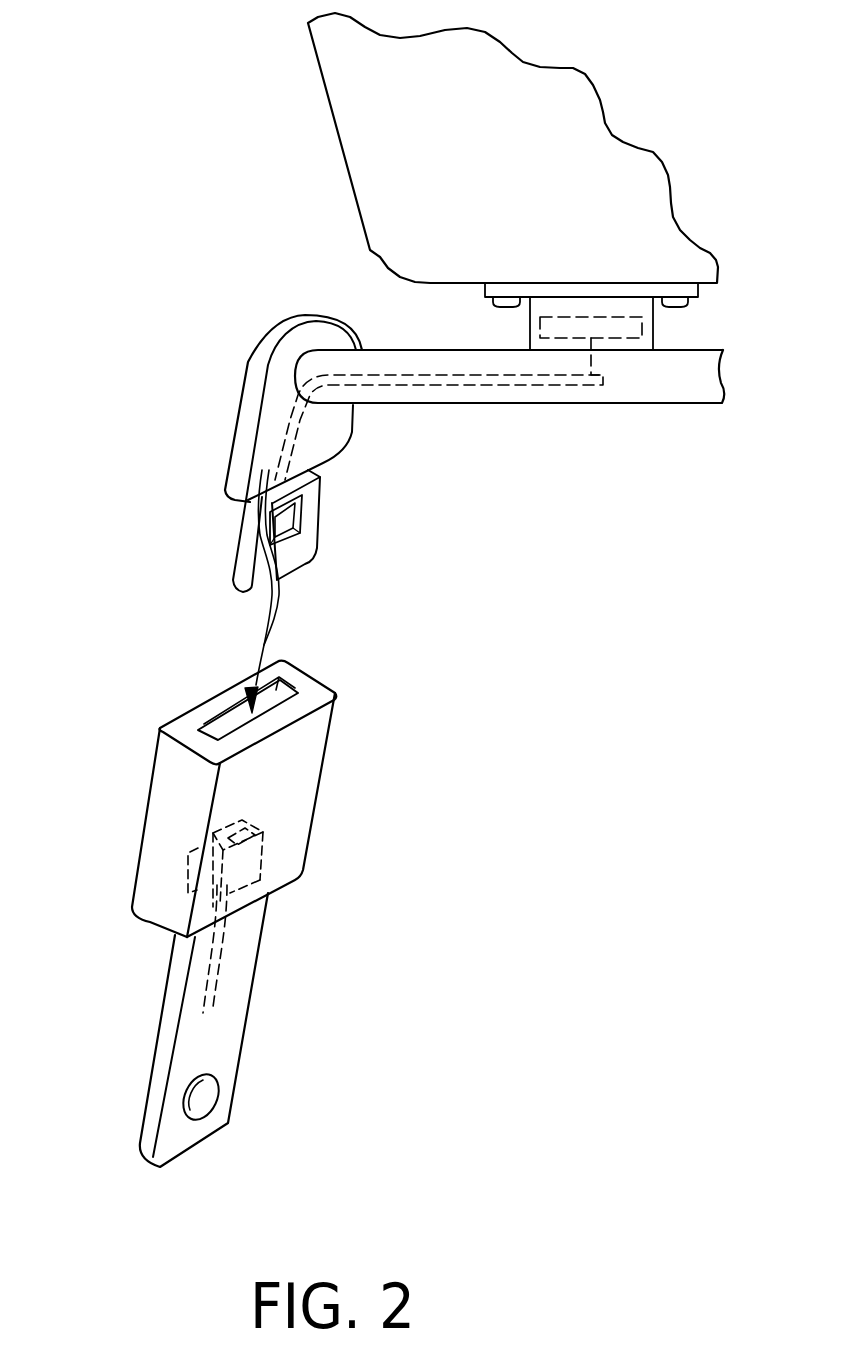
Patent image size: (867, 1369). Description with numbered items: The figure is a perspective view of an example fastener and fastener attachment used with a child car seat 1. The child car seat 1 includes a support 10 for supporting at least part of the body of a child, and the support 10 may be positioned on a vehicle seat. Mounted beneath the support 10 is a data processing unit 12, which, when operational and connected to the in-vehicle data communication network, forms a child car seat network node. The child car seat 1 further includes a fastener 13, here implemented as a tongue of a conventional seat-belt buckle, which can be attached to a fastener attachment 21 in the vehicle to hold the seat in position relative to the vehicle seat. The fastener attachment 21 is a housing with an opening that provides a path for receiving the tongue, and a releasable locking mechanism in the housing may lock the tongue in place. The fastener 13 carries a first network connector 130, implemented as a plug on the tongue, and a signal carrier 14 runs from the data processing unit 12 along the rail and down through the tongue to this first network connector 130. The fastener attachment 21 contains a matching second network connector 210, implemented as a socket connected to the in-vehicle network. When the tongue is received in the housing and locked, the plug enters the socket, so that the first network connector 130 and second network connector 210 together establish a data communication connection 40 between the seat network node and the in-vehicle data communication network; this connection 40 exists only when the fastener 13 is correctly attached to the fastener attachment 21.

The child car seat 1 is at (297, 251).
The support 10 is at (536, 207).
The data processing unit 12 is at (610, 330).
The fastener 13 is at (240, 447).
The signal carrier 14 is at (406, 380).
The fastener attachment 21 is at (150, 863).
The data communication connection 40 is at (222, 975).
The first network connector 130 is at (250, 612).
The second network connector 210 is at (307, 864).